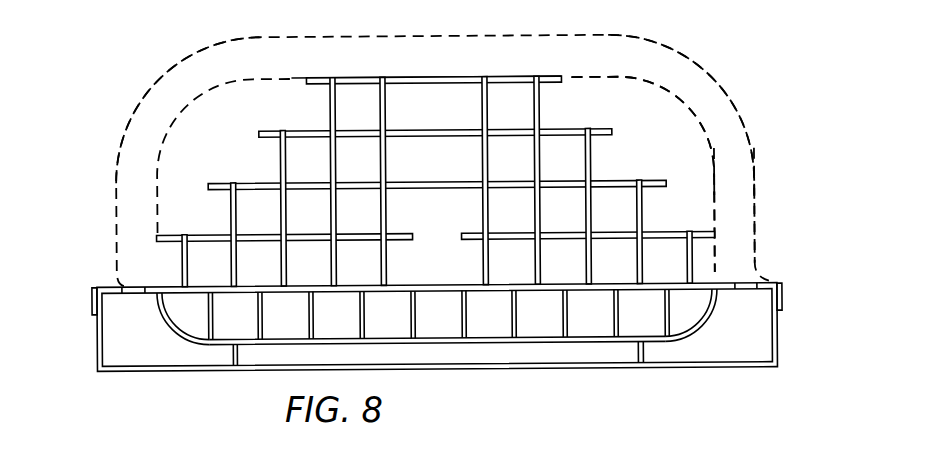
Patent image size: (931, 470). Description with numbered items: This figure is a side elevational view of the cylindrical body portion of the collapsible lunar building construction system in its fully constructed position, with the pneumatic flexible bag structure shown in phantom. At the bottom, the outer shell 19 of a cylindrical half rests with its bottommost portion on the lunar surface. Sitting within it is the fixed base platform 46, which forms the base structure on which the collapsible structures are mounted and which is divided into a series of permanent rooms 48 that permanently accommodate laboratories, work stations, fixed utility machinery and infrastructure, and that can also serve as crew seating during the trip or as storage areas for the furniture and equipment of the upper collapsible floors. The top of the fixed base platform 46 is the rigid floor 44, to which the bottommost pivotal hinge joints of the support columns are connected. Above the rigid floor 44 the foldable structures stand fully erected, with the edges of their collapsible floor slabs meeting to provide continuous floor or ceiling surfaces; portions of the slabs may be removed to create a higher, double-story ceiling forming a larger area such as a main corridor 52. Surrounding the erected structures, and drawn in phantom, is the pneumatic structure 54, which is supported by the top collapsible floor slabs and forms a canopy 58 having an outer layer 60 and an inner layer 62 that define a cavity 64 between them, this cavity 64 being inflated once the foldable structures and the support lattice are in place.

The outer shell 19 is at (748, 365).
The rigid floor 44 is at (171, 285).
The fixed base platform 46 is at (166, 325).
The permanent rooms 48 is at (592, 325).
The main corridor 52 is at (430, 258).
The pneumatic structure 54 is at (156, 87).
The canopy 58 is at (674, 51).
The outer layer 60 is at (733, 95).
The inner layer 62 is at (716, 153).
The cavity 64 is at (724, 123).